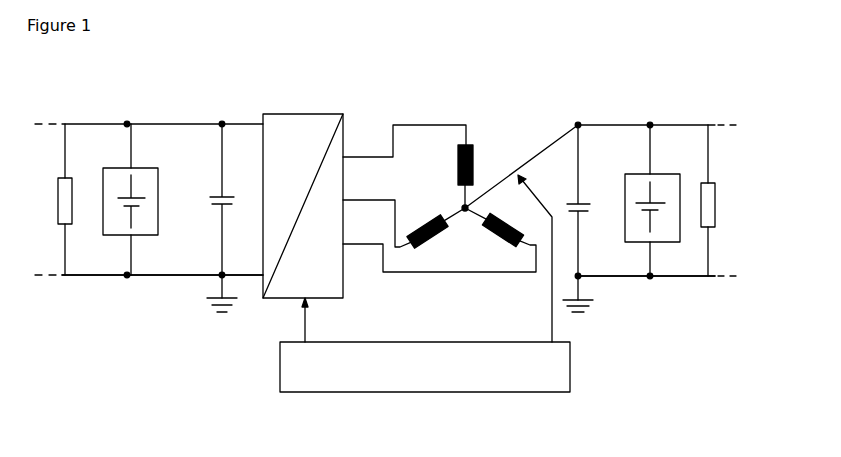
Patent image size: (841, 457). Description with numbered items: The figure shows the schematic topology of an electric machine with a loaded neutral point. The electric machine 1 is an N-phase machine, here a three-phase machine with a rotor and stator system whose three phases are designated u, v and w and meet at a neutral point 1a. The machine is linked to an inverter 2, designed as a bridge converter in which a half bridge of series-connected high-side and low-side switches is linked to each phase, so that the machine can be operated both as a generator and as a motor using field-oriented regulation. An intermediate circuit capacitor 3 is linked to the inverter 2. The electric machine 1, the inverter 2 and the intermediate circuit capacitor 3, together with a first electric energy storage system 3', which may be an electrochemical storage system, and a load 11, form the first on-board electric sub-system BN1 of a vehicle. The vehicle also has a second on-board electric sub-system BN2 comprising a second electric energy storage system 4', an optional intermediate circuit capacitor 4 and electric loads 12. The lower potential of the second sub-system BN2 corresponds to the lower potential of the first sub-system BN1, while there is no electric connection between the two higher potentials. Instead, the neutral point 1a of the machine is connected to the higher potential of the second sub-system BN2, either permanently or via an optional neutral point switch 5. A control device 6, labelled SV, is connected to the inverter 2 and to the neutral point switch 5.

The electric machine 1 is at (480, 138).
The neutral point 1a is at (466, 212).
The inverter 2 is at (300, 114).
The intermediate circuit capacitor 3 is at (202, 216).
The first electric energy storage system 3' is at (139, 199).
The intermediate circuit capacitor 4 is at (592, 217).
The second electric energy storage system 4' is at (656, 200).
The neutral point switch 5 is at (505, 178).
The control device 6 is at (372, 342).
The load 11 is at (64, 172).
The electric loads 12 is at (712, 180).
The first on-board electric sub-system BN1 is at (127, 279).
The second on-board electric sub-system BN2 is at (653, 278).